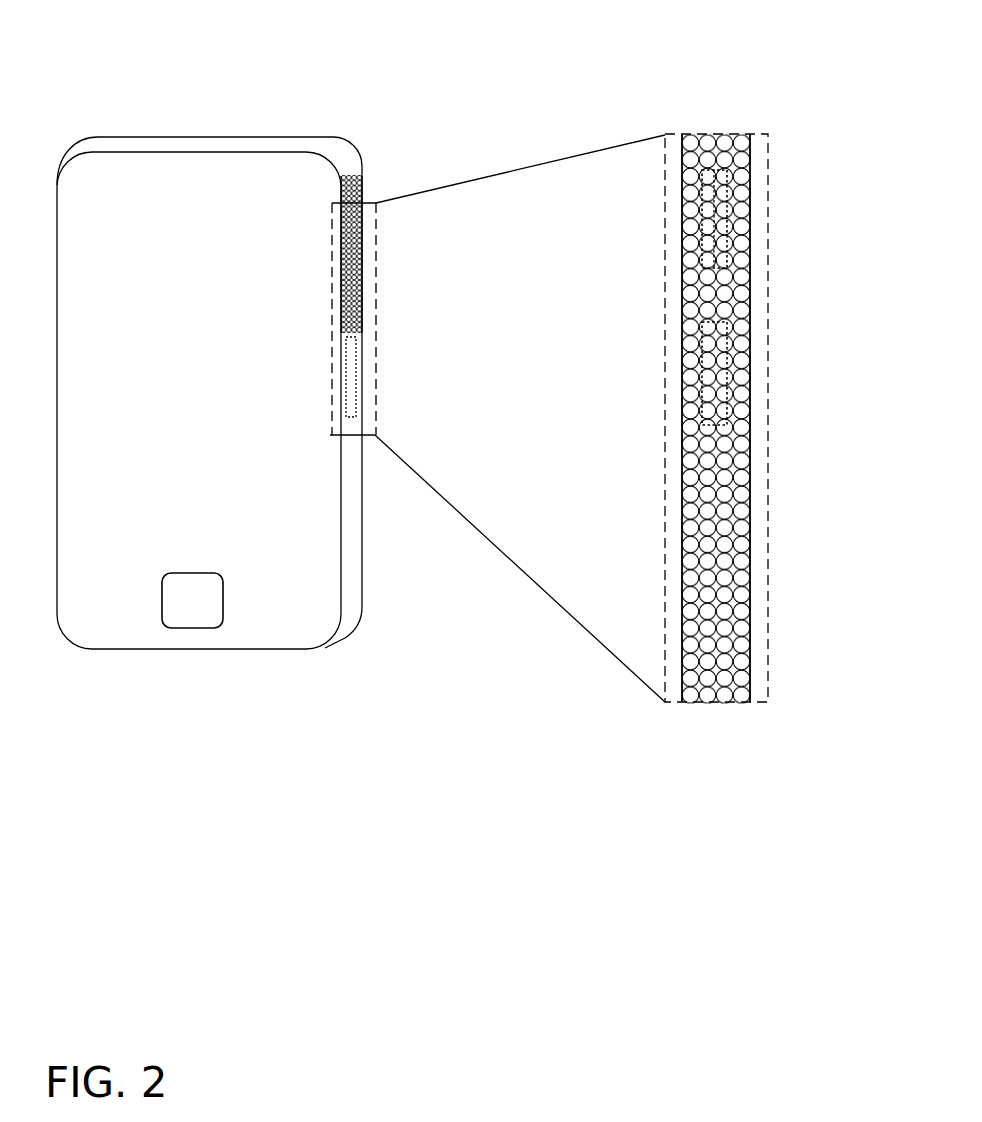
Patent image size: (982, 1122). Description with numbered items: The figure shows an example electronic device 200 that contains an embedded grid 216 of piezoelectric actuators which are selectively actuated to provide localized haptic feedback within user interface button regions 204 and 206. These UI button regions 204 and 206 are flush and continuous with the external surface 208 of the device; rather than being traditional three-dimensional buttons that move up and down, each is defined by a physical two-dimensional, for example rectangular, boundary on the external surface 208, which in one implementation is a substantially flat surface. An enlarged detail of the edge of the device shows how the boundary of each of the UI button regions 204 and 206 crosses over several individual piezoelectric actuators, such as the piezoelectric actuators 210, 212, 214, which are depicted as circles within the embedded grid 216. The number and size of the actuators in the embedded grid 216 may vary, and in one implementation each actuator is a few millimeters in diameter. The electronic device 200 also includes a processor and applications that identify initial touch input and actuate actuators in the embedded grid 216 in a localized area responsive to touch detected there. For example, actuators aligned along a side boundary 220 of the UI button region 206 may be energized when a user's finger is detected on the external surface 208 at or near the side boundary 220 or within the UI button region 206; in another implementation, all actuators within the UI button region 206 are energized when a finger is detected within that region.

The electronic device 200 is at (276, 90).
The user interface button region 204 is at (356, 223).
The user interface button region 206 is at (356, 362).
The external surface 208 is at (352, 530).
The piezoelectric actuator 210 is at (710, 190).
The piezoelectric actuator 212 is at (703, 208).
The piezoelectric actuator 214 is at (705, 237).
The embedded grid 216 is at (358, 311).
The side boundary 220 is at (742, 384).